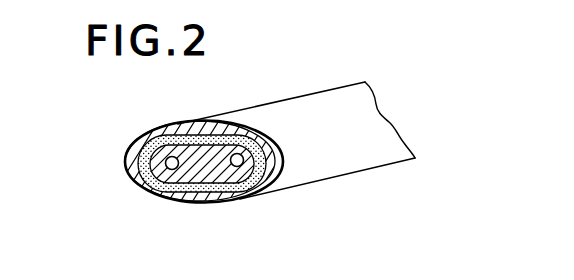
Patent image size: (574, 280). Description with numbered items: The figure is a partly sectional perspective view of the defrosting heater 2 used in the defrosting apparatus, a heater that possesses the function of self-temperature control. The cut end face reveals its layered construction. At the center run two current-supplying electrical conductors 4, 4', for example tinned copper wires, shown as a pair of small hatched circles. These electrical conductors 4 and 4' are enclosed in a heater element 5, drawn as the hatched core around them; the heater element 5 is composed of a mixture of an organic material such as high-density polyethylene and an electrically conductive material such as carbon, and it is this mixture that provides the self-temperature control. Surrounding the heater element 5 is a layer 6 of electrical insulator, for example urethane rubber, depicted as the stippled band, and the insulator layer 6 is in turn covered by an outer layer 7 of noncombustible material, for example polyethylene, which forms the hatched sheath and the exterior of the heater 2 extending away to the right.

The tube (insulated cable body) 2 is at (283, 100).
The current-supplying electrical conductor 4 is at (161, 134).
The current-supplying electrical conductor 4' is at (225, 119).
The heater element 5 is at (208, 177).
The layer of electrical insulator 6 is at (134, 151).
The layer of noncombustible material 7 is at (137, 179).